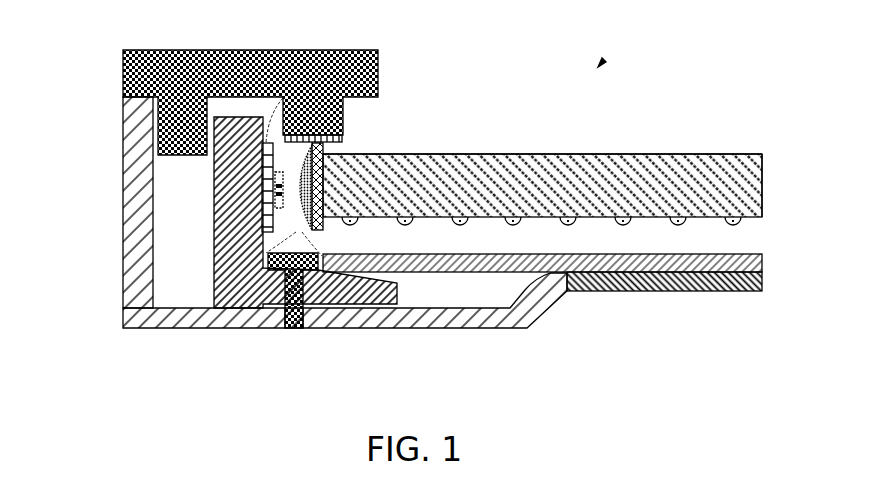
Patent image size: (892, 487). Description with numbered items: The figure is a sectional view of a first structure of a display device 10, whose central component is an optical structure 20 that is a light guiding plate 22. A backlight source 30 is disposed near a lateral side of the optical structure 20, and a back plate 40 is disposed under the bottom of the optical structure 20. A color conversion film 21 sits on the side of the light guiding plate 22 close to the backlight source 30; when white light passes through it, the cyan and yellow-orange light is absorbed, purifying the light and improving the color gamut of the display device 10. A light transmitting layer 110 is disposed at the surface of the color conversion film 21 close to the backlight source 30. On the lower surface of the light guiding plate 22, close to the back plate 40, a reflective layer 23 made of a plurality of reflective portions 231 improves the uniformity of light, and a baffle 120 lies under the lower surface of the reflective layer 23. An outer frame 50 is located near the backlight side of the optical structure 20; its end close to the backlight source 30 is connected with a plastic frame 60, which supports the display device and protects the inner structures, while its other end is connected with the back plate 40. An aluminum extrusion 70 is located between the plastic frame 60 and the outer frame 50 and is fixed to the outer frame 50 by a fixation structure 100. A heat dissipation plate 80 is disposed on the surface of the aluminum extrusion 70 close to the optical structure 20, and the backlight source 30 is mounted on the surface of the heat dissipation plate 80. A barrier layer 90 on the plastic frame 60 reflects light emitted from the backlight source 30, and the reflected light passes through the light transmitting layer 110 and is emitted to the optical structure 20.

The display device 10 is at (604, 62).
The optical structure 20 is at (574, 156).
The color conversion film 21 is at (373, 154).
The light guiding plate 22 is at (578, 180).
The reflective layer 23 is at (462, 212).
The reflective portion 231 is at (762, 198).
The backlight source 30 is at (308, 327).
The back plate 40 is at (762, 278).
The outer frame 50 is at (139, 298).
The plastic frame 60 is at (145, 48).
The aluminum extrusion 70 is at (214, 227).
The heat dissipation plate 80 is at (317, 48).
The barrier layer 90 is at (343, 128).
The fixation structure 100 is at (288, 328).
The light transmitting layer 110 is at (375, 327).
The baffle 120 is at (762, 254).